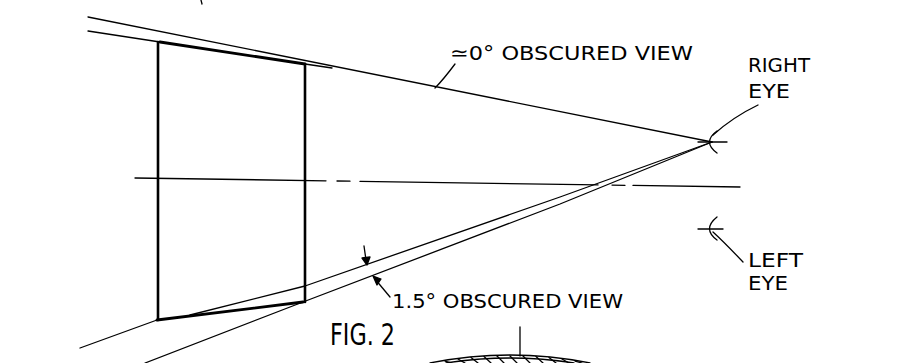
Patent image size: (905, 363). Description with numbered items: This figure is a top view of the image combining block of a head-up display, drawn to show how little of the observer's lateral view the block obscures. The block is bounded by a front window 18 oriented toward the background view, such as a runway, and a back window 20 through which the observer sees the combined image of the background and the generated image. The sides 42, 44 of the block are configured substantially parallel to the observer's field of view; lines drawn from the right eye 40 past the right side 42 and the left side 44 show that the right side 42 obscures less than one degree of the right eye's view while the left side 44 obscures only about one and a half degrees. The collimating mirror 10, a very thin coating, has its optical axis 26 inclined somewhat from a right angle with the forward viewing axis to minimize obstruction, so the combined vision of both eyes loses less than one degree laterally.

The collimating mirror 10 is at (615, 362).
The front window 18 is at (157, 221).
The back window 20 is at (306, 227).
The optical axis 26 is at (230, 7).
The right eye 40 is at (710, 138).
The right side 42 is at (194, 45).
The left side 44 is at (198, 318).